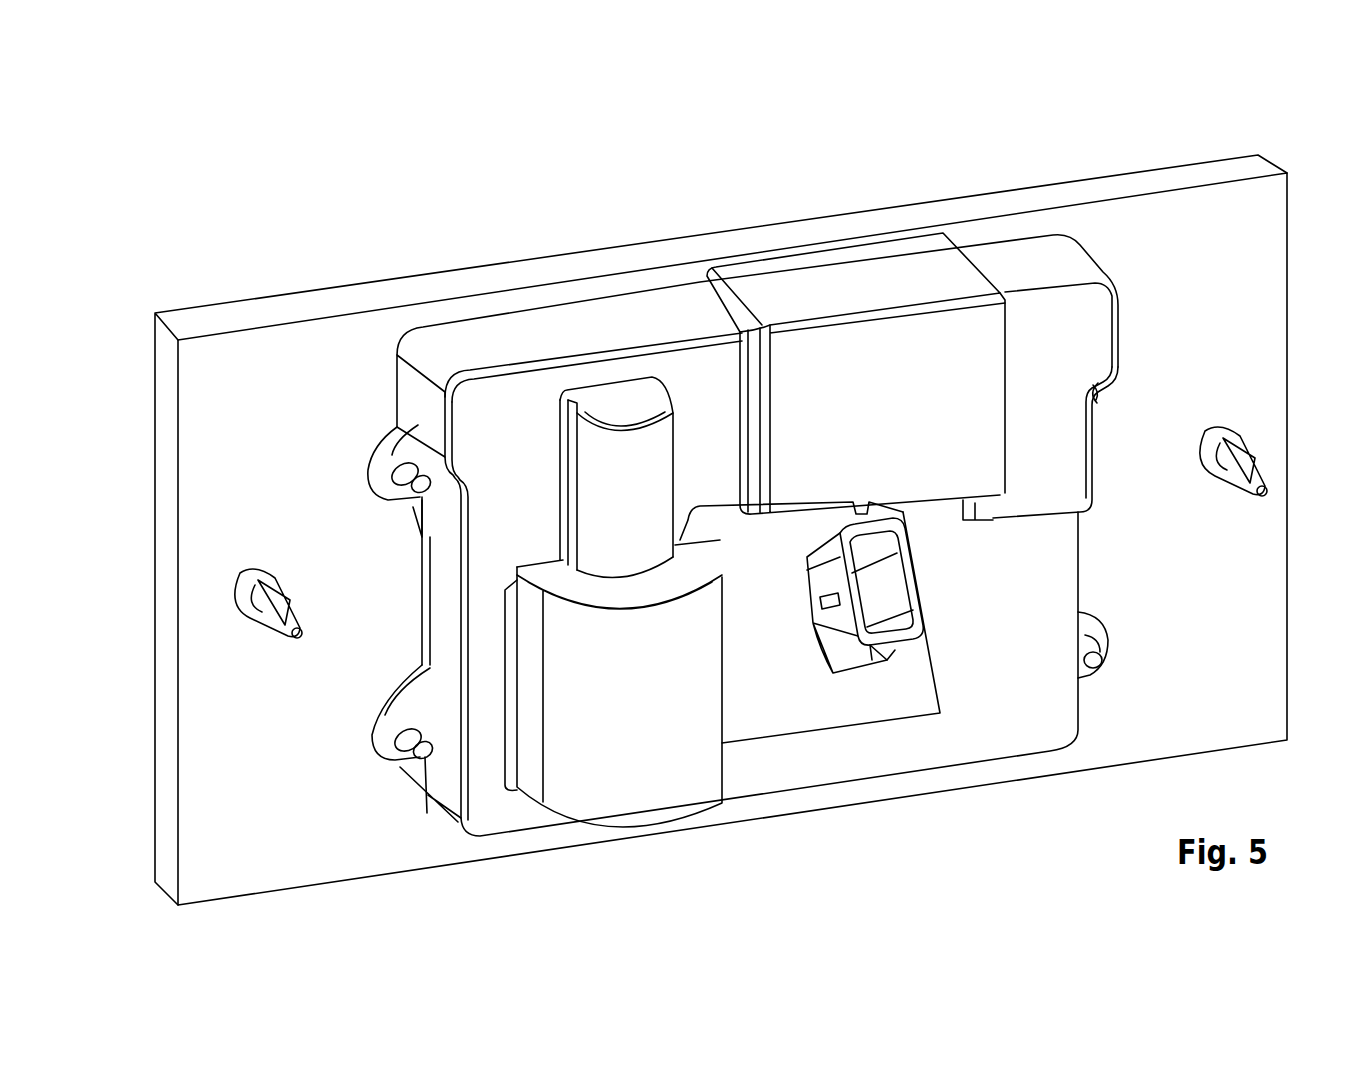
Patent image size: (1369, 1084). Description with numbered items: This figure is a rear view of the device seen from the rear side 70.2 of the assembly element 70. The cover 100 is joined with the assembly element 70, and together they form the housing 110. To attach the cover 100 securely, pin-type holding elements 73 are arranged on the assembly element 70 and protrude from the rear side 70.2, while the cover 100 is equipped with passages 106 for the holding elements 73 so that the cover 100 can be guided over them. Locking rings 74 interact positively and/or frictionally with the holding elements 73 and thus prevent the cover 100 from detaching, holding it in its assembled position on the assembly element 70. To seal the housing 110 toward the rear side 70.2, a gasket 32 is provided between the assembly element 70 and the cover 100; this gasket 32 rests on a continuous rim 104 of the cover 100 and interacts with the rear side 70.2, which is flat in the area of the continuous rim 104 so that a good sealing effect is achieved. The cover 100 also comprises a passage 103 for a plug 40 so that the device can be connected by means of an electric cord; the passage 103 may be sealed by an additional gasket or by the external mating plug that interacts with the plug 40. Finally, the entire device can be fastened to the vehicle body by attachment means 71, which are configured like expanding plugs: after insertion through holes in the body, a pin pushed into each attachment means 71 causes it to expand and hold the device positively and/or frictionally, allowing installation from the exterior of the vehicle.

The assembly element 70 is at (325, 340).
The rear side 70.2 is at (272, 485).
The gasket 32 is at (541, 301).
The cover 100 is at (786, 280).
The continuous rim 104 is at (1000, 240).
The housing 110 is at (1163, 277).
The passage 103 is at (893, 660).
The plug 40 is at (898, 610).
The holding elements 73 is at (1103, 394).
The locking rings 74 is at (392, 496).
The passages 106 is at (1110, 622).
The attachment means 71 is at (245, 598).